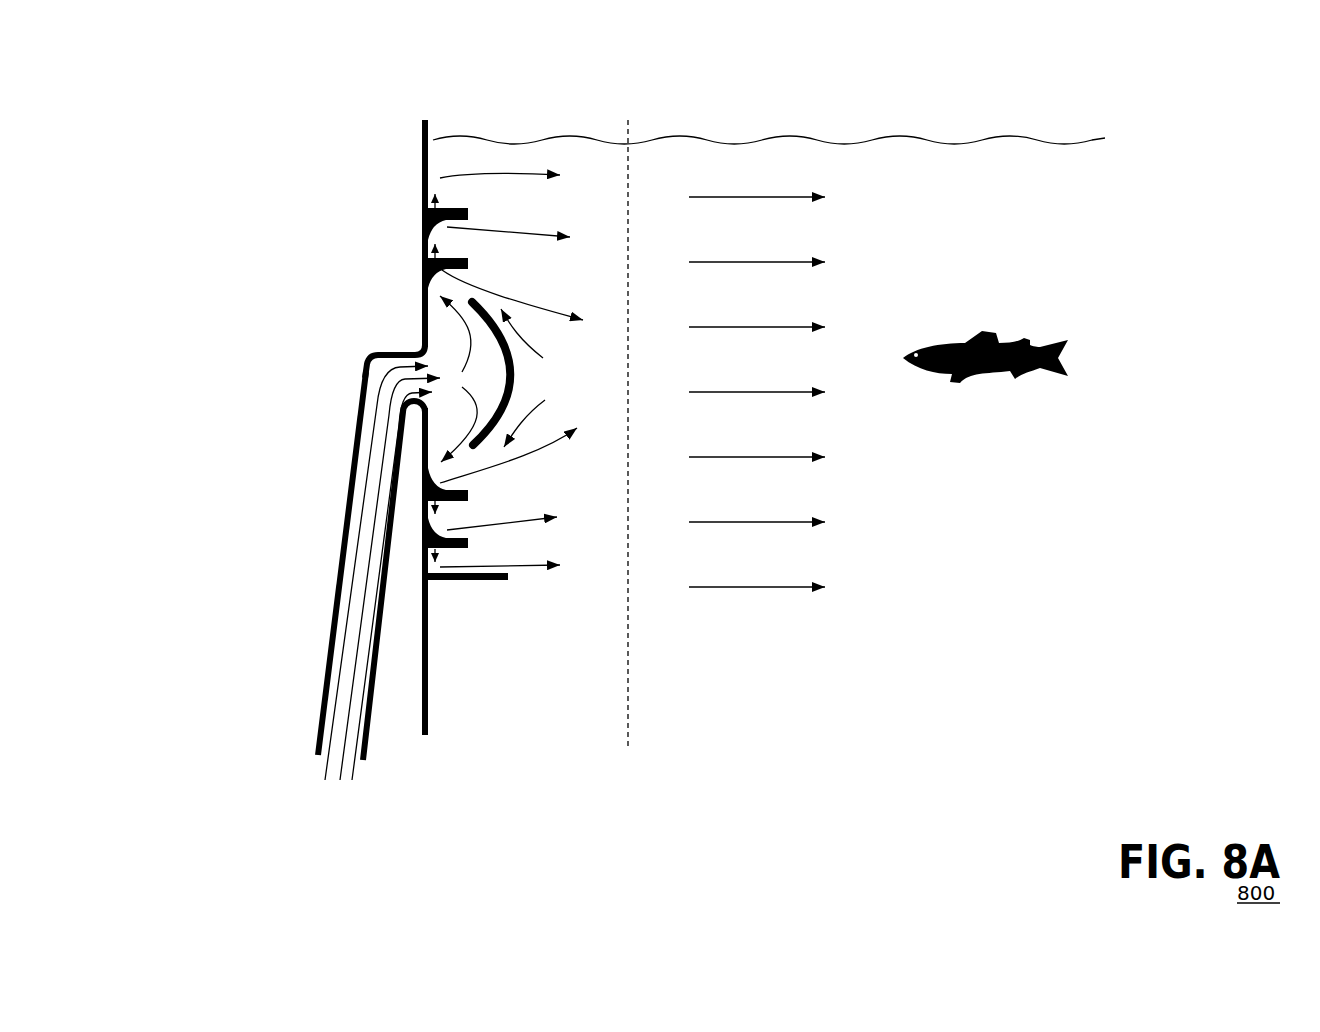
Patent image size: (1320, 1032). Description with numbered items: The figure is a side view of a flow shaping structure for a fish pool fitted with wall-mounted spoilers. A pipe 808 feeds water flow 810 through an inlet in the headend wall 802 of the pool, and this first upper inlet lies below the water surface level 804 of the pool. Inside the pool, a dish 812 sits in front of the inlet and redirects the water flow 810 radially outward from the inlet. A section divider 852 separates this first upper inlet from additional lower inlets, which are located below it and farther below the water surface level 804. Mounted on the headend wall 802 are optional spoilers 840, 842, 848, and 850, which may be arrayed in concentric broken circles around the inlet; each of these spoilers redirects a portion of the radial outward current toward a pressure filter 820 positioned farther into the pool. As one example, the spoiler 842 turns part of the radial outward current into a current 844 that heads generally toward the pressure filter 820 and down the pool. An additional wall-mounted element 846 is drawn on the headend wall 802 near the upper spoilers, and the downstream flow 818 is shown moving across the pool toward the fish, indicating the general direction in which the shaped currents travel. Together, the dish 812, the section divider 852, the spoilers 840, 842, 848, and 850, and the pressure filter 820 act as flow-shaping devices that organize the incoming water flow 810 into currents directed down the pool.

The headend wall 802 is at (422, 150).
The water surface level 804 is at (1020, 136).
The pipe 808 is at (323, 677).
The water flow 810 is at (343, 763).
The dish 812 is at (465, 322).
The downstream flow arrows 818 is at (763, 587).
The pressure filter 820 is at (628, 668).
The spoiler 840 is at (468, 546).
The spoiler 842 is at (422, 266).
The current 844 is at (550, 297).
The first upper flange 846 is at (422, 247).
The spoiler 848 is at (422, 212).
The spoiler 850 is at (463, 490).
The section divider 852 is at (465, 581).